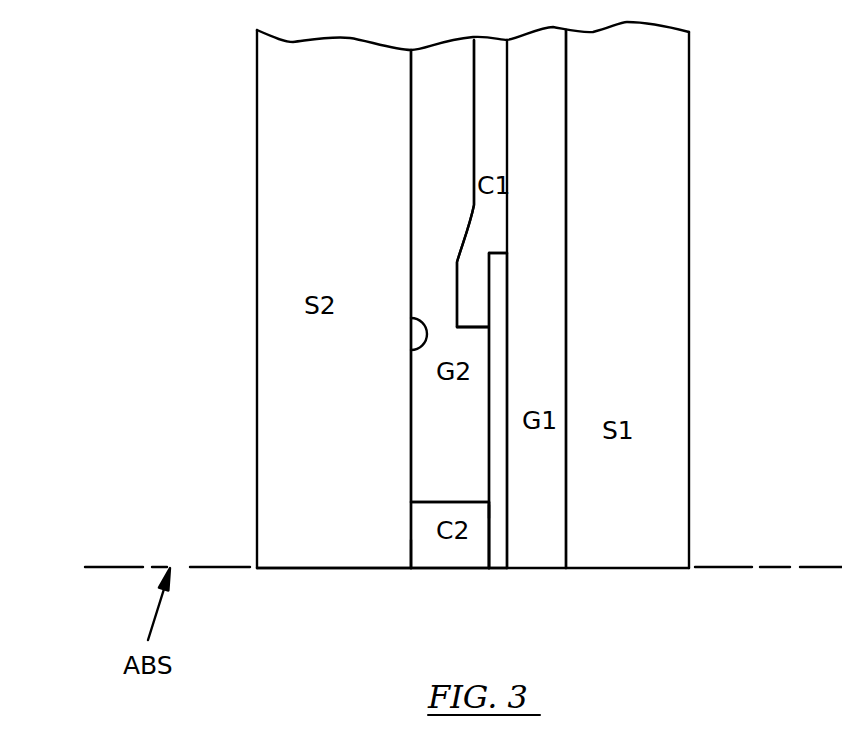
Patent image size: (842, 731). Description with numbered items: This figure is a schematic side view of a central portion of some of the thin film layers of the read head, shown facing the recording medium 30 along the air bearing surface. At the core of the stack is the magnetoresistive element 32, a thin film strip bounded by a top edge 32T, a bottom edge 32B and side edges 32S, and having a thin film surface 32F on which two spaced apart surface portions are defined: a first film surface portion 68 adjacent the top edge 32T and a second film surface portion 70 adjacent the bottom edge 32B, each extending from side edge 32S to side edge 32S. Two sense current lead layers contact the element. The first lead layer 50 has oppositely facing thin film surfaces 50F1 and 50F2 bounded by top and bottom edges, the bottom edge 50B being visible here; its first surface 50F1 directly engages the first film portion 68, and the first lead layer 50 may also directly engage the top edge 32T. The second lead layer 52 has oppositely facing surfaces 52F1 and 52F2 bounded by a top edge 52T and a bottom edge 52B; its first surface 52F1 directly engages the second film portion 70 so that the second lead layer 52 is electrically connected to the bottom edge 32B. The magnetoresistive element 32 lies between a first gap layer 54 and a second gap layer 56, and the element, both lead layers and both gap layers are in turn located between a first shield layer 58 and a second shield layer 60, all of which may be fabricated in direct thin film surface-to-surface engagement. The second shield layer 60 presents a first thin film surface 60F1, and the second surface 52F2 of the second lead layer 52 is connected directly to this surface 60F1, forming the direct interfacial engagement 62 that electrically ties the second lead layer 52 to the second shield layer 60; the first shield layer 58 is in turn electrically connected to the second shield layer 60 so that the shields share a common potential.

The magnetic recording medium / disk 30 is at (740, 573).
The magnetoresistive element 32 is at (522, 535).
The top edge of the magnetoresistive element 32T is at (497, 252).
The bottom edge of the magnetoresistive element 32B is at (500, 570).
The thin film surface of the magnetoresistive element 32F is at (484, 410).
The side edge of the magnetoresistive element 32S is at (500, 442).
The first sense current thin film lead layer 50 is at (458, 77).
The first thin film surface of the first lead layer 50F1 is at (508, 108).
The second thin film surface of the first lead layer 50F2 is at (473, 167).
The bottom edge of the first lead layer 50B is at (472, 327).
The second sense current thin film lead layer 52 is at (452, 482).
The top edge of the second lead layer 52T is at (443, 502).
The bottom edge of the second lead layer 52B is at (447, 570).
The first thin film surface of the second lead layer 52F1 is at (492, 543).
The second thin film surface of the second lead layer 52F2 is at (410, 537).
The first thin film gap layer 54 is at (543, 370).
The second thin film gap layer 56 is at (410, 457).
The first thin film shield layer 58 is at (655, 83).
The second thin film shield layer 60 is at (303, 137).
The first thin film surface of the second shield layer 60F1 is at (411, 350).
The direct interfacial engagement 62 is at (410, 555).
The first thin film surface portion 68 is at (488, 296).
The second thin film surface portion 70 is at (486, 507).